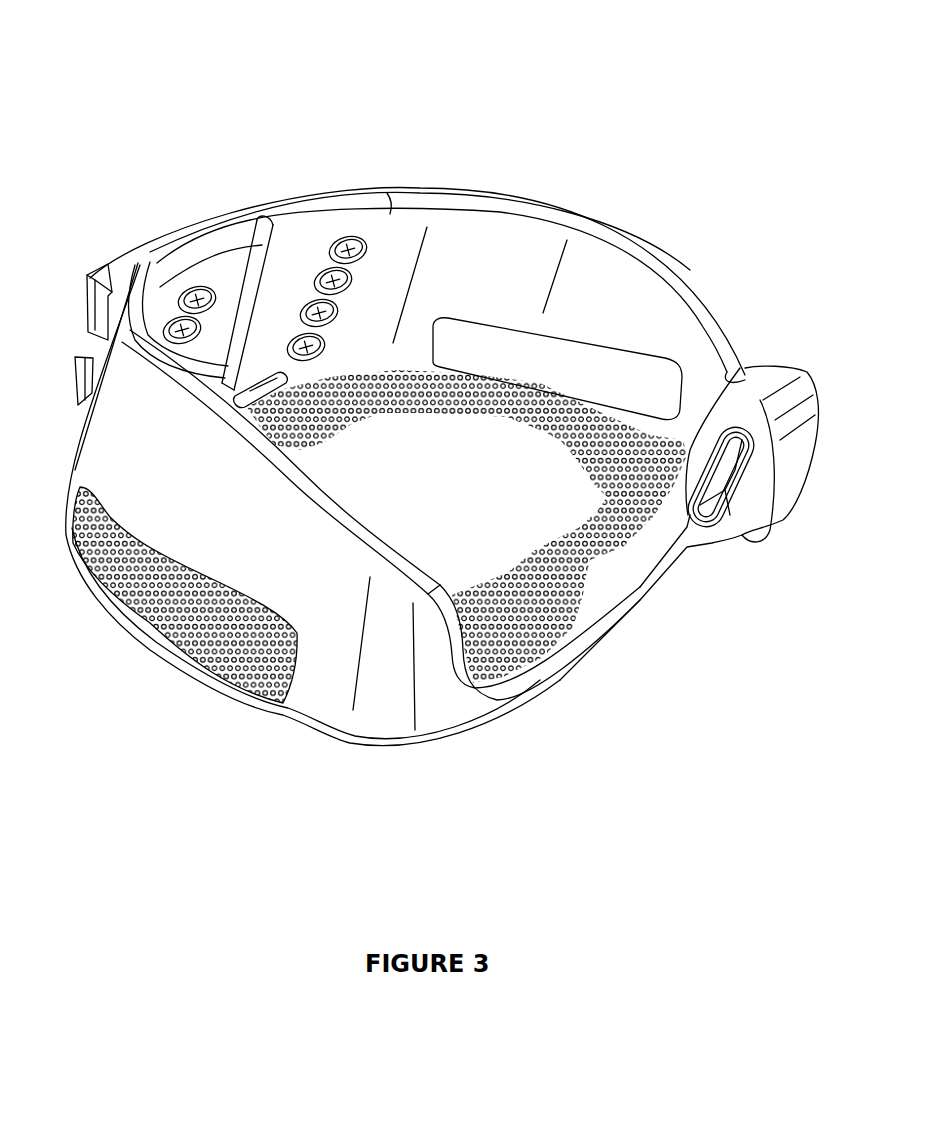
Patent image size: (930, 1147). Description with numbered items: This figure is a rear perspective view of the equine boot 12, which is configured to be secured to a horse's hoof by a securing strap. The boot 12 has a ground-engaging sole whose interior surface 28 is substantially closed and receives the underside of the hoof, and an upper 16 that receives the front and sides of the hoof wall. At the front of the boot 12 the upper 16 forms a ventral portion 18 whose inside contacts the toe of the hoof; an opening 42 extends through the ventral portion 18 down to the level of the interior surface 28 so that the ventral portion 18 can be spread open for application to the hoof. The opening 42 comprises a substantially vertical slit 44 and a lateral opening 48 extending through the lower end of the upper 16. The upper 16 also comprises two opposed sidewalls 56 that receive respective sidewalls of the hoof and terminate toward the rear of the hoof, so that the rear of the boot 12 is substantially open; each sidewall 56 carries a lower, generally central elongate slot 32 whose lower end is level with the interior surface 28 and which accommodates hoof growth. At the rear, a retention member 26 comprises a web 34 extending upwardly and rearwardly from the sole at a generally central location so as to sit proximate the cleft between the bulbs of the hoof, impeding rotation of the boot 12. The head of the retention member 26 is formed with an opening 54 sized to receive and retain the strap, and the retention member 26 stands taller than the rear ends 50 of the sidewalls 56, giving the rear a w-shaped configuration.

The equine boot 12 is at (130, 125).
The upper 16 is at (160, 470).
The ventral portion 18 is at (233, 165).
The retention member 26 is at (790, 345).
The interior surface 28 is at (452, 543).
The elongate slot 32 is at (595, 367).
The web 34 is at (643, 550).
The opening 42 is at (220, 377).
The vertical slit 44 is at (254, 282).
The lateral opening 48 is at (295, 378).
The rear end 50 is at (443, 618).
The opening 54 is at (733, 490).
The sidewall 56 is at (503, 287).